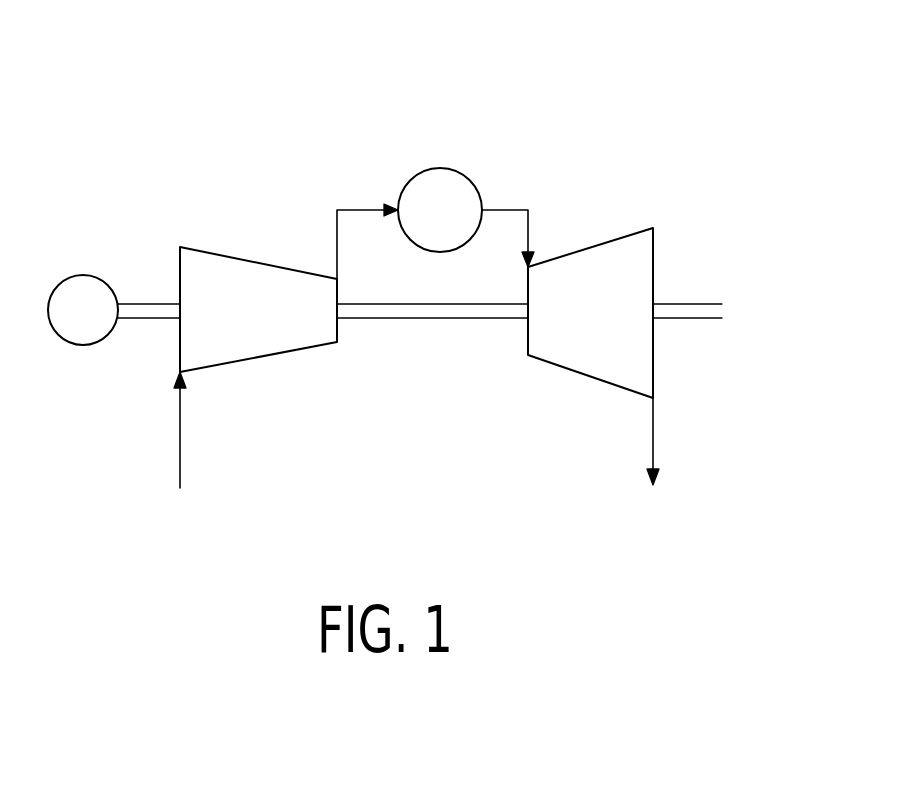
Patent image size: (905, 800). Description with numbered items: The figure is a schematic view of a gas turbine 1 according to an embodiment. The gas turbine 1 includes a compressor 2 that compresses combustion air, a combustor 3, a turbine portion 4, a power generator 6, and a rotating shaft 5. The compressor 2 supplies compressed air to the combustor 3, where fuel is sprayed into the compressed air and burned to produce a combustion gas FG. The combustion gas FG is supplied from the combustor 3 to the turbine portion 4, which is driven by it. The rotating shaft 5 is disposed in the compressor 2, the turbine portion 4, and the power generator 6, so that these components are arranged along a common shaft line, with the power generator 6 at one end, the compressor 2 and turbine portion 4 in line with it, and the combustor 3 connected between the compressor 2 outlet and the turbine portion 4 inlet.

The gas turbine 1 is at (194, 69).
The compressor 2 is at (248, 280).
The combustor 3 is at (440, 178).
The turbine portion 4 is at (598, 260).
The rotating shaft 5 is at (153, 319).
The power generator 6 is at (85, 337).
The combustion gas FG is at (505, 206).